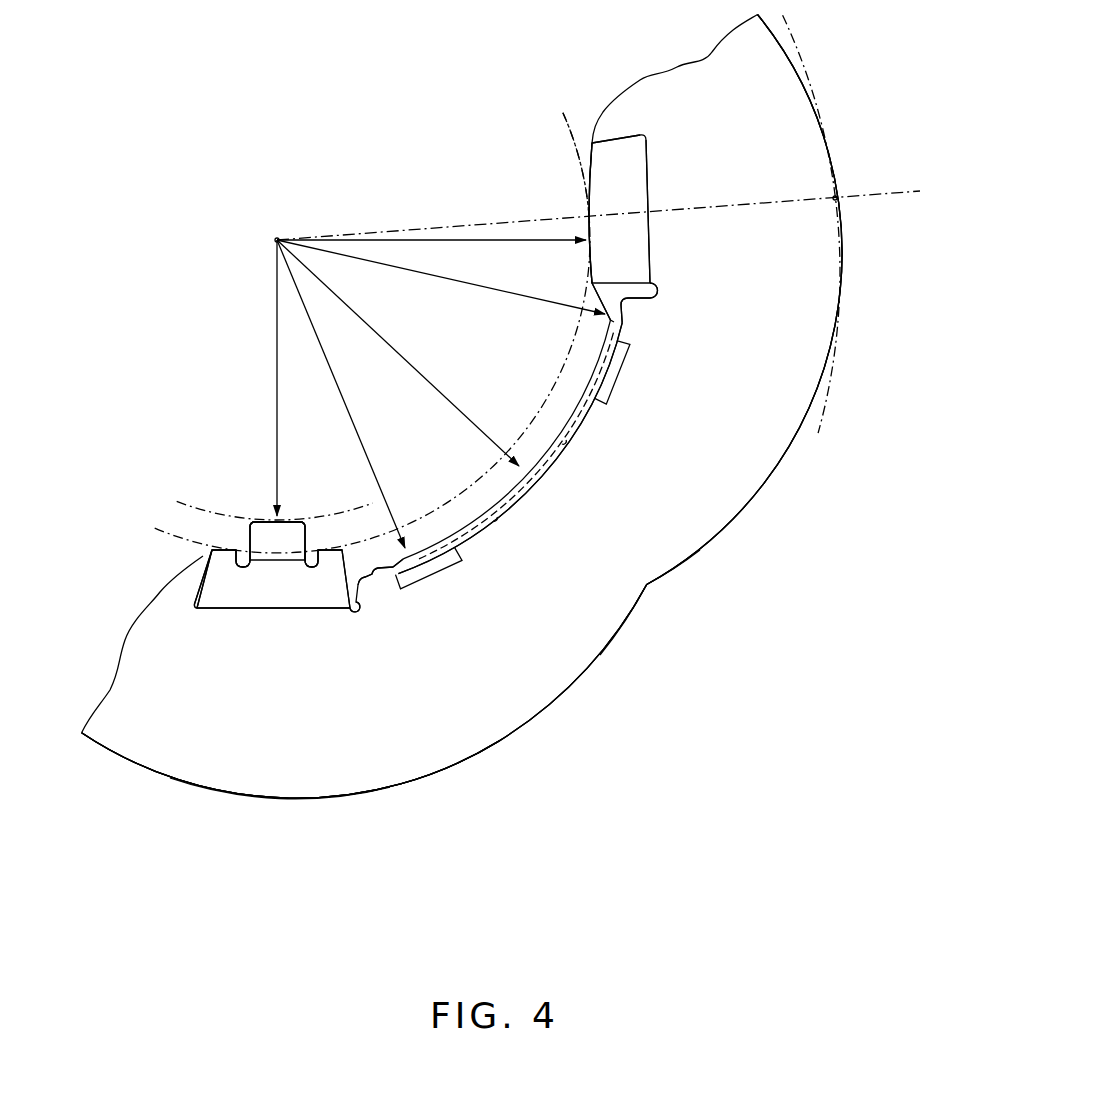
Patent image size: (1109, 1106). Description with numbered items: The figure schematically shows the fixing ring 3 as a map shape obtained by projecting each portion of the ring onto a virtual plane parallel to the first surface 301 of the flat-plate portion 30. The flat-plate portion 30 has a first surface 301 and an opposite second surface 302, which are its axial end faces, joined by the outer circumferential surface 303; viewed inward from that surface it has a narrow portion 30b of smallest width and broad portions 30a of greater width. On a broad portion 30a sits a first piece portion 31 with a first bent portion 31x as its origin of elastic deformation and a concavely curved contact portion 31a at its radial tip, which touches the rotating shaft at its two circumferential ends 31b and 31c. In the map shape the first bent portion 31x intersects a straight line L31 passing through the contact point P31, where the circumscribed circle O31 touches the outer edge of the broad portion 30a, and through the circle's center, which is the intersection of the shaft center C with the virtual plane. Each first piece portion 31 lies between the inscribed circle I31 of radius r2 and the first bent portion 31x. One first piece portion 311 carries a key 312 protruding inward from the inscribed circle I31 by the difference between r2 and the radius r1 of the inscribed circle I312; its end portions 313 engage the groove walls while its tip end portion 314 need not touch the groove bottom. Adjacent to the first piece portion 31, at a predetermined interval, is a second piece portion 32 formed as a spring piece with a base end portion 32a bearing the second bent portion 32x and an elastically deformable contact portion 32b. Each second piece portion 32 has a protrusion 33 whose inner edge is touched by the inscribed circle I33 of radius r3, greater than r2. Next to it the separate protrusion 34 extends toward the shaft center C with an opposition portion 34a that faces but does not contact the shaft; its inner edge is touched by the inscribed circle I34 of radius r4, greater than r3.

The fixing ring 3 is at (125, 757).
The flat-plate portion 30 is at (742, 483).
The broad portion 30a is at (838, 172).
The narrow portion 30b is at (655, 588).
The first surface 301 is at (237, 775).
The second surface 302 is at (258, 775).
The outer circumferential surface 303 is at (538, 724).
The first piece portion 31 is at (627, 190).
The first piece portion (with key) 311 is at (290, 592).
The key (second protrusion) 312 is at (270, 552).
The end portions of the key 313 is at (243, 556).
The tip end portion of the key 314 is at (285, 522).
The contact portion 31a is at (588, 196).
The end of contact portion 31b is at (590, 277).
The end of contact portion 31c is at (589, 143).
The first bent portion 31x is at (652, 160).
The second piece portion 32 is at (638, 323).
The base end portion 32a is at (652, 290).
The contact portion 32b is at (612, 380).
The second bent portion 32x is at (630, 330).
The protrusion (first protrusion) 33 is at (608, 320).
The protrusion 34 is at (547, 460).
The opposition portion 34a is at (500, 487).
The inscribed circle I31 is at (563, 114).
The inscribed circle I33 is at (394, 333).
The inscribed circle I34 is at (578, 443).
The inscribed circle I312 is at (240, 515).
The circumscribed circle O31 is at (816, 432).
The contact point P31 is at (843, 195).
The straight line L31 is at (878, 205).
The shaft center C is at (268, 238).
The radius of inscribed circle I312 r1 is at (279, 378).
The radius of inscribed circle I31 r2 is at (431, 213).
The radius of inscribed circle I33 r3 is at (340, 386).
The radius of inscribed circle I34 r4 is at (398, 353).